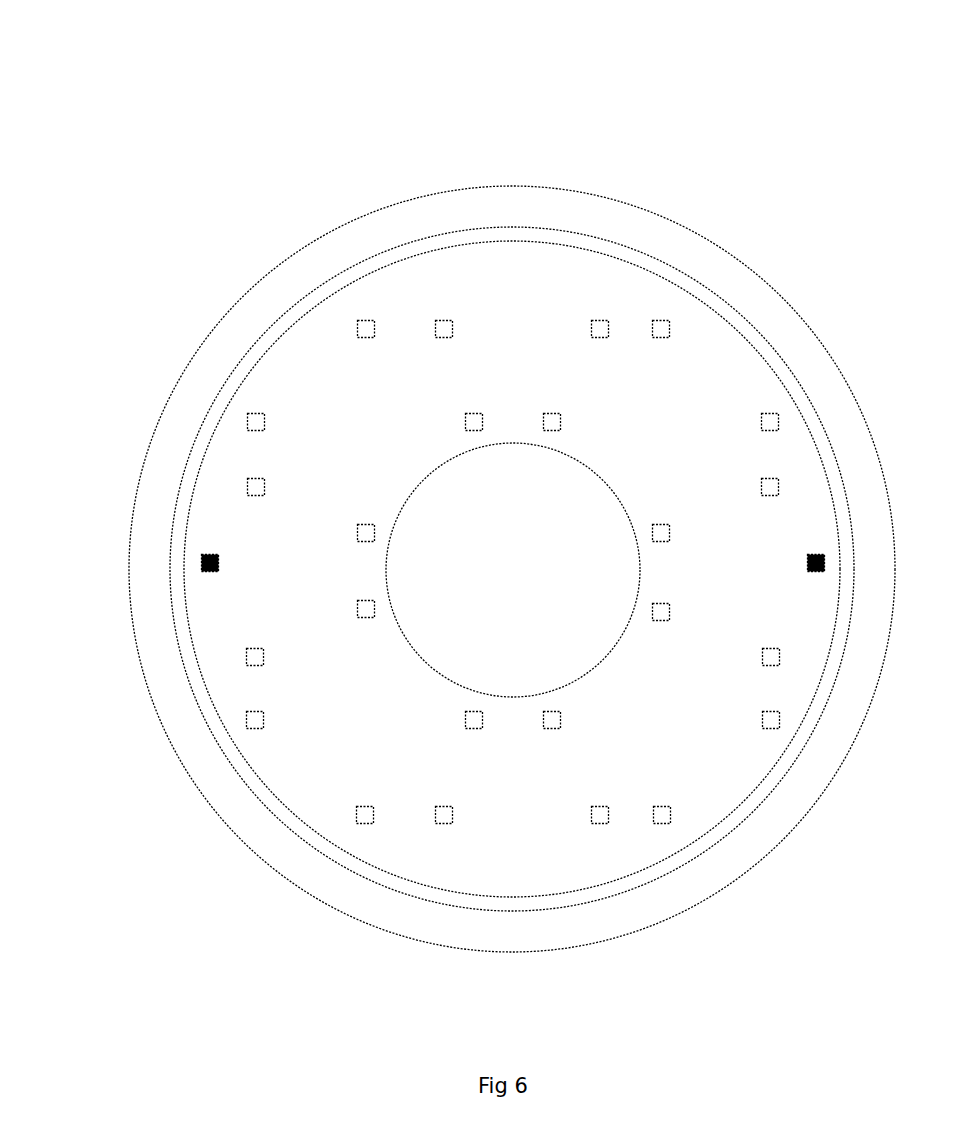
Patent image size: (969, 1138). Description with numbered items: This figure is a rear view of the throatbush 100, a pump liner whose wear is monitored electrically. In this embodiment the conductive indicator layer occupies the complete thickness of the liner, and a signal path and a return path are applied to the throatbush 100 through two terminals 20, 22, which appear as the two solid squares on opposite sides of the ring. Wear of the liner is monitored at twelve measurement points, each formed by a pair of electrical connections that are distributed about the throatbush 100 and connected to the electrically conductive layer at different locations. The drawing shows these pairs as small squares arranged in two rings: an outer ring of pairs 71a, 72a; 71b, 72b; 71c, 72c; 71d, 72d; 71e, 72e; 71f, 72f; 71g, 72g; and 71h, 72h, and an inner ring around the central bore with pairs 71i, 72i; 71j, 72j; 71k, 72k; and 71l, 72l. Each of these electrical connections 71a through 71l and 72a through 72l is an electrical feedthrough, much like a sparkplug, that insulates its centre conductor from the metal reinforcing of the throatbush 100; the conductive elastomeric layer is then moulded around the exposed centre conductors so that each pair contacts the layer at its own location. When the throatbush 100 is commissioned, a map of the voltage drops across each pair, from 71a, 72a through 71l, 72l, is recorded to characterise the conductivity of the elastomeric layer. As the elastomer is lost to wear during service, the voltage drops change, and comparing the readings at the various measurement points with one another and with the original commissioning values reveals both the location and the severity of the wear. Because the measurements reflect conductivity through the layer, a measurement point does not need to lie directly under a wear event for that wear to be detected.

The throatbush 100 is at (711, 128).
The terminal 20 is at (208, 555).
The terminal 22 is at (816, 555).
The electrical connection 71a is at (247, 654).
The electrical connection 71b is at (357, 818).
The electrical connection 71c is at (593, 823).
The electrical connection 71d is at (780, 722).
The electrical connection 71e is at (770, 478).
The electrical connection 71f is at (598, 320).
The electrical connection 71g is at (367, 320).
The electrical connection 71h is at (249, 480).
The electrical connection 71i is at (466, 430).
The electrical connection 71j is at (375, 530).
The electrical connection 71k is at (470, 712).
The electrical connection 71l is at (655, 610).
The electrical connection 72a is at (247, 721).
The electrical connection 72b is at (440, 825).
The electrical connection 72c is at (660, 825).
The electrical connection 72d is at (780, 660).
The electrical connection 72e is at (770, 413).
The electrical connection 72f is at (658, 320).
The electrical connection 72g is at (445, 320).
The electrical connection 72h is at (250, 413).
The electrical connection 72i is at (548, 430).
The electrical connection 72j is at (370, 608).
The electrical connection 72k is at (550, 712).
The electrical connection 72l is at (653, 531).